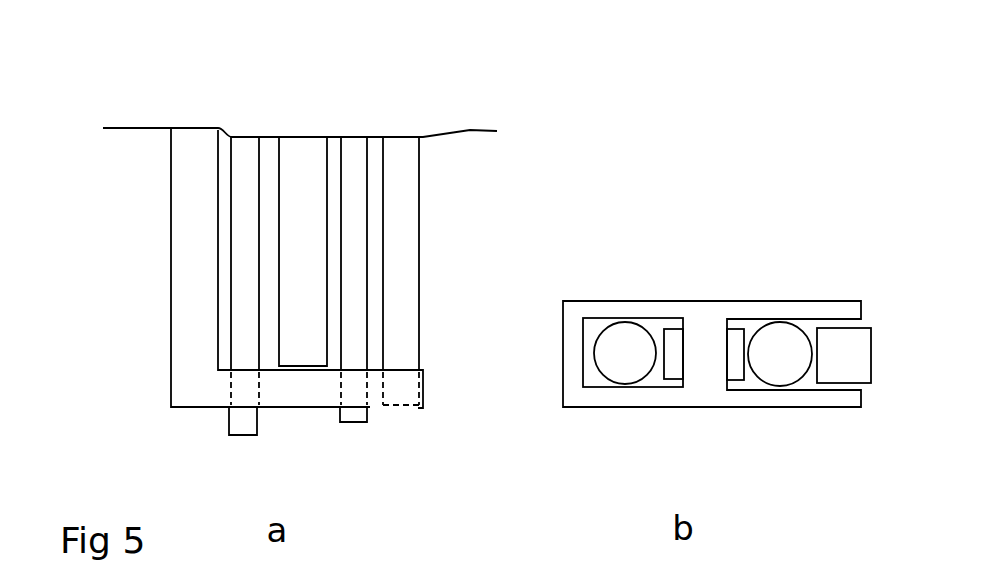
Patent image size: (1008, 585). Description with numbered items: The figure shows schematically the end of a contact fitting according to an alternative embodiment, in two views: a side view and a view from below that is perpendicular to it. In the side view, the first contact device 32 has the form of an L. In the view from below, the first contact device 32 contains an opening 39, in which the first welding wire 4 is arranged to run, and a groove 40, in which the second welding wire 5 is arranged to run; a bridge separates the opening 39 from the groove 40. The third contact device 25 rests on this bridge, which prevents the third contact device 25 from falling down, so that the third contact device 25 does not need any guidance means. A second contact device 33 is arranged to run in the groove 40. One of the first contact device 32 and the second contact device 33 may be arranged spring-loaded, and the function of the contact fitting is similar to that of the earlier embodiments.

The first welding wire 4 is at (251, 160).
The second welding wire 5 is at (356, 161).
The third contact device 25 is at (296, 167).
The first contact device 32 is at (187, 239).
The second contact device 33 is at (405, 252).
The opening 39 is at (588, 382).
The groove 40 is at (807, 380).